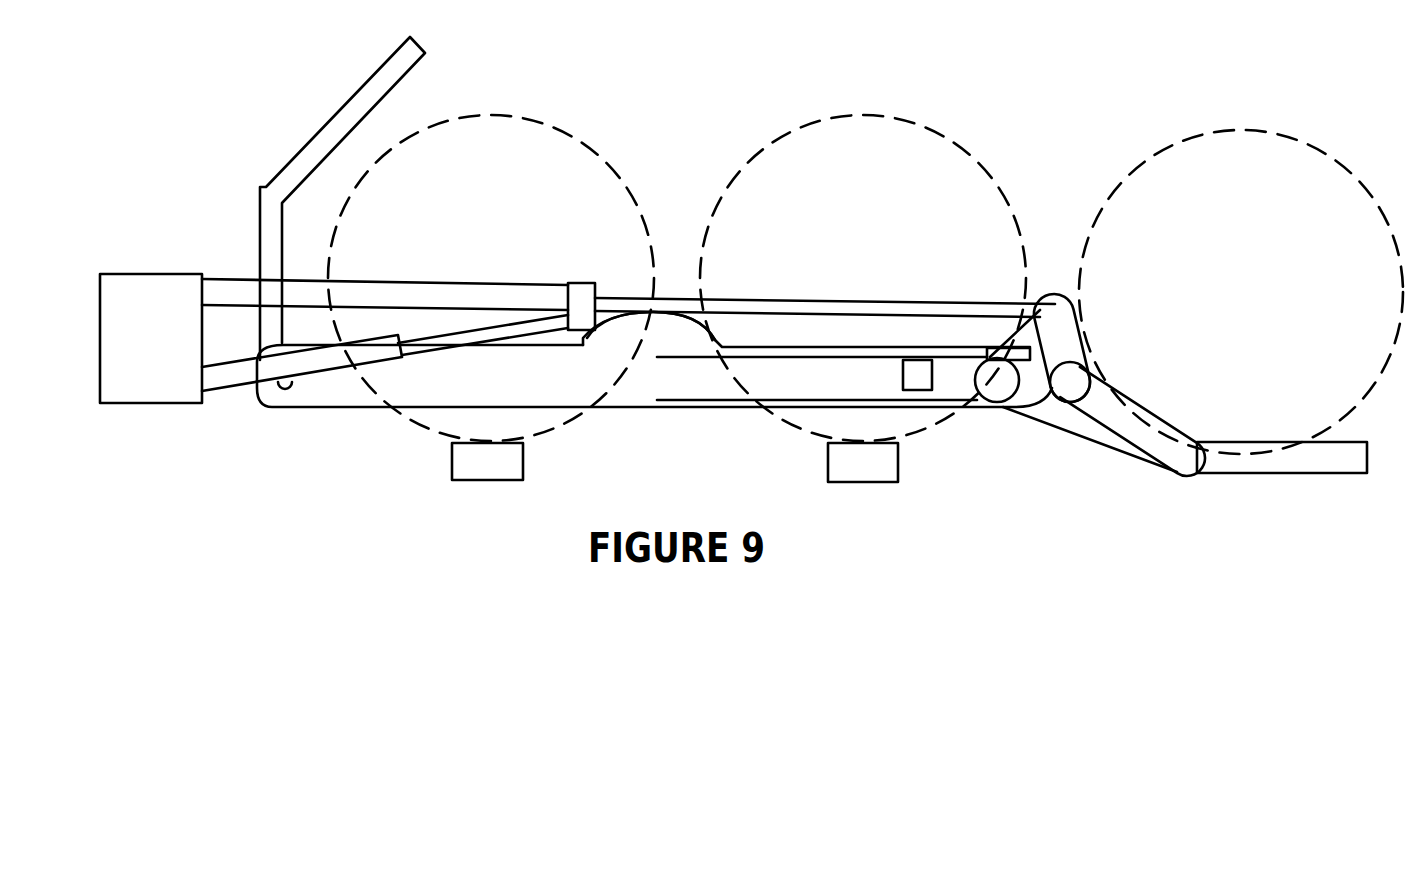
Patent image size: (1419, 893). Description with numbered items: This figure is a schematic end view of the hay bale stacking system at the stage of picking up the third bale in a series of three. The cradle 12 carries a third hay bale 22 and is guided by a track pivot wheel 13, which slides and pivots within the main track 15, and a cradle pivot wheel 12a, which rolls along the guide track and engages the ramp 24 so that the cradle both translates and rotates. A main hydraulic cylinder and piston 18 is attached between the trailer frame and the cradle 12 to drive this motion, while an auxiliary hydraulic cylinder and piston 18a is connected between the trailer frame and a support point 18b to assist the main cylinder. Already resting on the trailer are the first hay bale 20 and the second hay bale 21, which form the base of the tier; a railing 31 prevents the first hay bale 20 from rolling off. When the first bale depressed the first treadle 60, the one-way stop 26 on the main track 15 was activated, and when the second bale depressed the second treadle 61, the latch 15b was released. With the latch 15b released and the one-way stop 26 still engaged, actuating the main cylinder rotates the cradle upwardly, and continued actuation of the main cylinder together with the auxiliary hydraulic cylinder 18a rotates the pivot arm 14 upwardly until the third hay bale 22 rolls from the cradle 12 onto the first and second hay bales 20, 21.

The cradle 12 is at (1215, 515).
The cradle pivot wheel 12a is at (1070, 392).
The track pivot wheel 13 is at (997, 387).
The pivot arm 14 is at (497, 394).
The main track 15 is at (800, 394).
The latch 15b is at (923, 383).
The main hydraulic cylinder and piston 18 is at (243, 293).
The auxiliary hydraulic cylinder and piston 18a is at (244, 386).
The support point 18b is at (583, 318).
The first hay bale 20 is at (500, 279).
The second hay bale 21 is at (880, 292).
The third hay bale 22 is at (1227, 311).
The ramp 24 is at (693, 318).
The one-way stop 26 is at (1030, 352).
The railing 31 is at (357, 128).
The first treadle 60 is at (475, 474).
The second treadle 61 is at (850, 476).